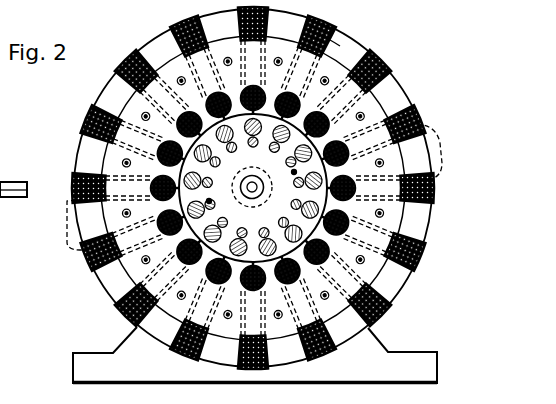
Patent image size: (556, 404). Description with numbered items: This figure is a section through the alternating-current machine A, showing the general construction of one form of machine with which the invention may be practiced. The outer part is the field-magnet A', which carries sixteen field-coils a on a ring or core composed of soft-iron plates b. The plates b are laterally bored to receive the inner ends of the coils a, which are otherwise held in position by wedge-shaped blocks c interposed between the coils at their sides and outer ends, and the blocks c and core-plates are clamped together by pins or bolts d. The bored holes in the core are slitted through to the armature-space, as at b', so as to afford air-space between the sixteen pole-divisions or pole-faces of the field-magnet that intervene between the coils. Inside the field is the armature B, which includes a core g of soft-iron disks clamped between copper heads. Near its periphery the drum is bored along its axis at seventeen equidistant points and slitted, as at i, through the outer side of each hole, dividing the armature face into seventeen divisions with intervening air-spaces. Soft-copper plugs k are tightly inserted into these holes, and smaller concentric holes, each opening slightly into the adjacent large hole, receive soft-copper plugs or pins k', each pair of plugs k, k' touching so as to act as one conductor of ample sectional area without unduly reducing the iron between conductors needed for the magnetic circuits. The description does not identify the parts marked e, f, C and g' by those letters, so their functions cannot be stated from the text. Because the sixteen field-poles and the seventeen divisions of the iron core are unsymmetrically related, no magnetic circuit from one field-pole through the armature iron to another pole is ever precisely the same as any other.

The machine A is at (218, 239).
The field-magnet A' is at (341, 72).
The field-coils a is at (316, 24).
The wedge-shaped blocks c is at (253, 188).
The pins or bolts d is at (278, 58).
The soft-iron plates b is at (253, 191).
The slits b' is at (258, 178).
The bracket e is at (67, 222).
The bracket f is at (482, 140).
The armature B is at (253, 188).
The armature shaft C is at (252, 176).
The core g is at (284, 188).
The armature conductors g' is at (216, 190).
The soft-copper plugs k is at (276, 188).
The soft-copper plugs or pins k' is at (225, 190).
The slits i is at (292, 171).